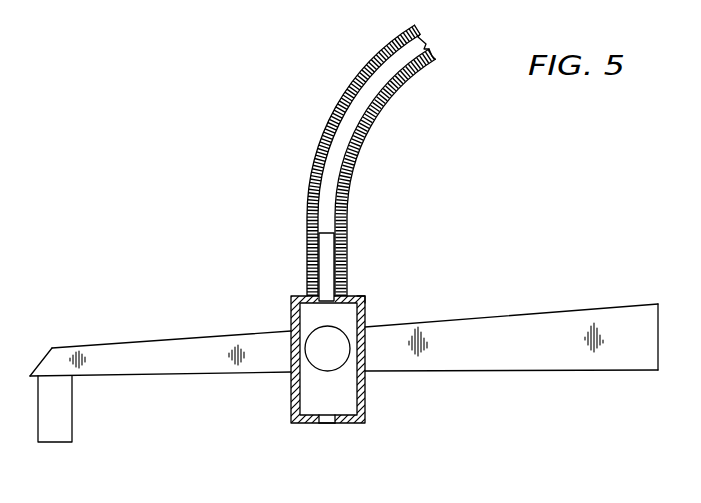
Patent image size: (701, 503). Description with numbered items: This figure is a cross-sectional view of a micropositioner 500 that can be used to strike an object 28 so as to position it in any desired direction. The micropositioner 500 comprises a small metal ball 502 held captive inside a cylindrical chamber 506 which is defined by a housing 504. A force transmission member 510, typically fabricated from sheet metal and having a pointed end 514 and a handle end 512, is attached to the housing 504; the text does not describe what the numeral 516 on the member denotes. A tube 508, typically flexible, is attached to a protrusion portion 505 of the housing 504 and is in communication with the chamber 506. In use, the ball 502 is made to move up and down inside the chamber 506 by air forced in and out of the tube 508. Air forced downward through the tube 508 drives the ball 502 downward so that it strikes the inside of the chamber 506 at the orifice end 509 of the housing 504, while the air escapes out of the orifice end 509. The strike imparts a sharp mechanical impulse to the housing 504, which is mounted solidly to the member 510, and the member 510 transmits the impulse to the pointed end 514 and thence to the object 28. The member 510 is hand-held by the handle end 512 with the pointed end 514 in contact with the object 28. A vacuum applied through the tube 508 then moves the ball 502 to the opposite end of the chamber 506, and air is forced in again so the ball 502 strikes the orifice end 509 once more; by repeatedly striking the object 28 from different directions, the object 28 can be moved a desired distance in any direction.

The micropositioner 500 is at (231, 114).
The small metal ball 502 is at (320, 357).
The housing 504 is at (292, 297).
The protrusion portion 505 is at (328, 262).
The cylindrical chamber 506 is at (366, 300).
The tube 508 is at (396, 96).
The orifice end 509 is at (327, 423).
The force transmission member 510 is at (465, 371).
The handle end 512 is at (608, 371).
The pointed end 514 is at (105, 344).
The arm lower edge 516 is at (152, 377).
The object 28 is at (72, 430).